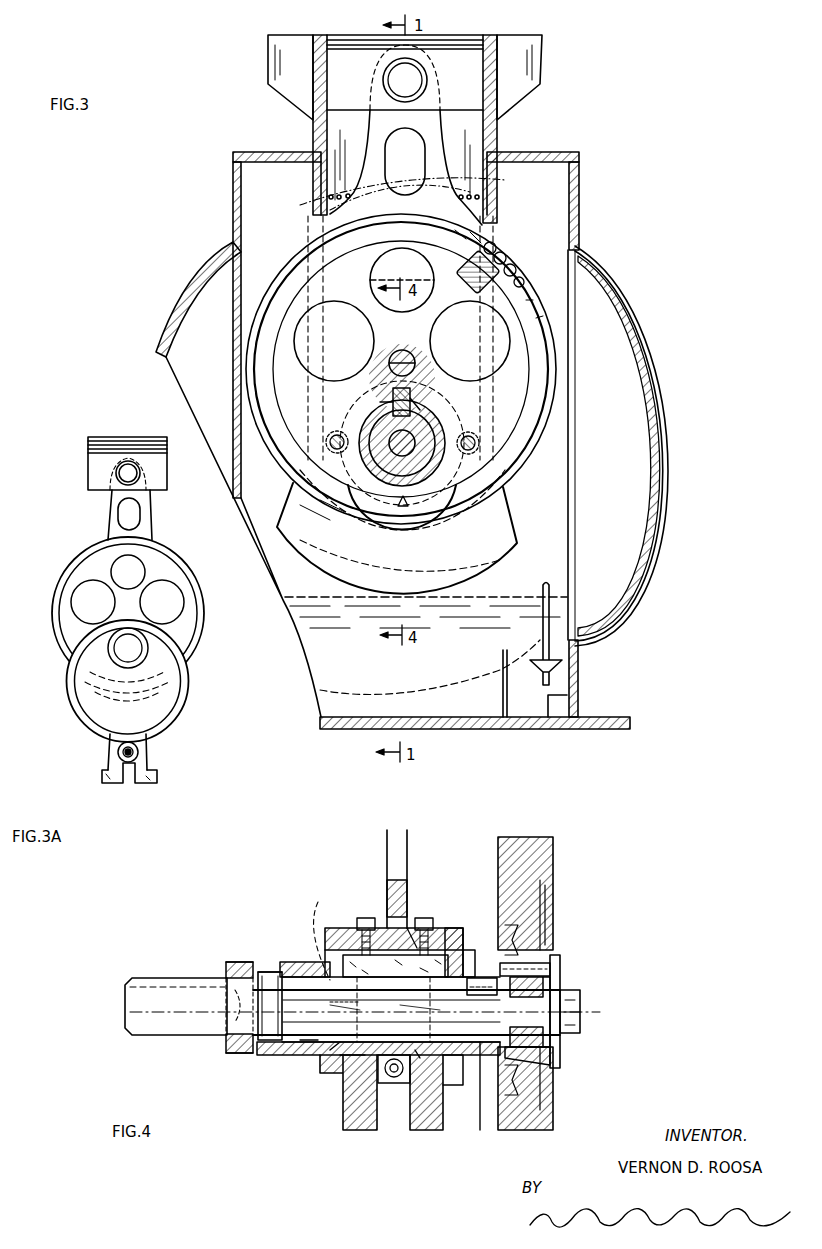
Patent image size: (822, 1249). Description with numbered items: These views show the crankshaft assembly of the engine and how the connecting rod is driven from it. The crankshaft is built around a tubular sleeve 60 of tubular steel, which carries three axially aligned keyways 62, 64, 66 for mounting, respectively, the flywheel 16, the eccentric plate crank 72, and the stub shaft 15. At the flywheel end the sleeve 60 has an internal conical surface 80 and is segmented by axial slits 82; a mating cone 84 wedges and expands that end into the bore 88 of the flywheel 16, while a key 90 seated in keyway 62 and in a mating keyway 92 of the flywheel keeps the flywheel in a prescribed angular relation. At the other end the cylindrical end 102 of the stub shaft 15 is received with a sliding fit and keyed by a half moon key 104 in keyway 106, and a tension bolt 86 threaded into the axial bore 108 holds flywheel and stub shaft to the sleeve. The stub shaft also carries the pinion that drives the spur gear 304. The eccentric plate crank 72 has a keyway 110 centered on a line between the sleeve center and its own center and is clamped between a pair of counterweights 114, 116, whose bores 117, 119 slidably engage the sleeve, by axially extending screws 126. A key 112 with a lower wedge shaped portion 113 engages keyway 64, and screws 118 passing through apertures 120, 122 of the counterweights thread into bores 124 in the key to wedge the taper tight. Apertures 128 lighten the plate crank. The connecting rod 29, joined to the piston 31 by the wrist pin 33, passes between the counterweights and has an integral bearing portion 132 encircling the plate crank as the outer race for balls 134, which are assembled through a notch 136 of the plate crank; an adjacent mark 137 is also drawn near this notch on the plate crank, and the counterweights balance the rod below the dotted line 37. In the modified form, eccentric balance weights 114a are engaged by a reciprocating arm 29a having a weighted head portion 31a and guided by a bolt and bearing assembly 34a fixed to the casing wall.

In FIG. 4, the stub shaft 15 is at (193, 1014).
In FIG. 4, the flywheel 16 is at (525, 877).
In FIG. 3, the connecting rod 29 is at (433, 145).
In FIG. 3A, the connecting rod 29 is at (110, 526).
In FIG. 3A, the reciprocating arm 29a is at (113, 740).
In FIG. 3, the piston 31 is at (469, 106).
In FIG. 3A, the piston 31 is at (95, 476).
In FIG. 3A, the weighted head portion 31a is at (160, 778).
In FIG. 3, the wrist pin 33 is at (384, 82).
In FIG. 3A, the bolt and bearing assembly 34a is at (129, 764).
In FIG. 3, the dotted line 37 is at (470, 192).
In FIG. 4, the tubular sleeve 60 is at (487, 1060).
In FIG. 4, the keyway 62 is at (552, 977).
In FIG. 3, the keyway 64 is at (392, 402).
In FIG. 4, the keyway 64 is at (467, 960).
In FIG. 4, the keyway 66 is at (262, 972).
In FIG. 3, the eccentric plate crank 72 is at (411, 339).
In FIG. 3A, the eccentric plate crank 72 is at (155, 572).
In FIG. 4, the eccentric plate crank 72 is at (400, 868).
In FIG. 4, the internal conical surface 80 is at (562, 980).
In FIG. 4, the axial slits 82 is at (582, 1013).
In FIG. 4, the mating cone 84 is at (545, 1038).
In FIG. 4, the tension bolt 86 is at (365, 1058).
In FIG. 4, the bore 88 is at (552, 1062).
In FIG. 4, the key 90 is at (545, 960).
In FIG. 4, the mating keyway 92 is at (548, 960).
In FIG. 4, the cylindrical end 102 is at (268, 1036).
In FIG. 4, the half moon key 104 is at (262, 970).
In FIG. 4, the keyway 106 is at (282, 986).
In FIG. 4, the threaded axial bore 108 is at (222, 1057).
In FIG. 3, the keyway 110 is at (411, 404).
In FIG. 4, the keyway 110 is at (408, 928).
In FIG. 3, the key 112 is at (392, 406).
In FIG. 4, the key 112 is at (481, 987).
In FIG. 3, the wedge shaped portion 113 is at (418, 427).
In FIG. 4, the counterweight 114 is at (350, 1133).
In FIG. 3A, the eccentric balance weight 114a is at (182, 708).
In FIG. 3, the counterweight 116 is at (435, 580).
In FIG. 4, the counterweight 116 is at (428, 1133).
In FIG. 4, the bore 117 is at (355, 1042).
In FIG. 4, the screws 118 is at (366, 918).
In FIG. 4, the bore 119 is at (417, 1050).
In FIG. 4, the aperture 120 is at (357, 940).
In FIG. 4, the aperture 122 is at (450, 928).
In FIG. 4, the threaded bores 124 is at (392, 980).
In FIG. 3, the screws 126 is at (330, 449).
In FIG. 4, the screws 126 is at (312, 934).
In FIG. 3, the apertures 128 is at (358, 339).
In FIG. 3, the bearing portion 132 is at (458, 507).
In FIG. 4, the bearing portion 132 is at (393, 1084).
In FIG. 3, the balls 134 is at (504, 262).
In FIG. 4, the balls 134 is at (350, 1058).
In FIG. 3, the notch 136 is at (353, 496).
In FIG. 3, the index mark 137 is at (403, 507).
In FIG. 4, the spur gear 304 is at (238, 960).